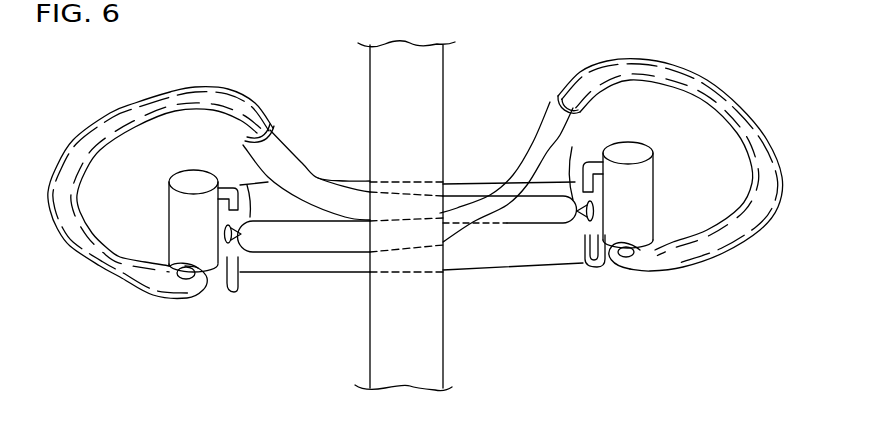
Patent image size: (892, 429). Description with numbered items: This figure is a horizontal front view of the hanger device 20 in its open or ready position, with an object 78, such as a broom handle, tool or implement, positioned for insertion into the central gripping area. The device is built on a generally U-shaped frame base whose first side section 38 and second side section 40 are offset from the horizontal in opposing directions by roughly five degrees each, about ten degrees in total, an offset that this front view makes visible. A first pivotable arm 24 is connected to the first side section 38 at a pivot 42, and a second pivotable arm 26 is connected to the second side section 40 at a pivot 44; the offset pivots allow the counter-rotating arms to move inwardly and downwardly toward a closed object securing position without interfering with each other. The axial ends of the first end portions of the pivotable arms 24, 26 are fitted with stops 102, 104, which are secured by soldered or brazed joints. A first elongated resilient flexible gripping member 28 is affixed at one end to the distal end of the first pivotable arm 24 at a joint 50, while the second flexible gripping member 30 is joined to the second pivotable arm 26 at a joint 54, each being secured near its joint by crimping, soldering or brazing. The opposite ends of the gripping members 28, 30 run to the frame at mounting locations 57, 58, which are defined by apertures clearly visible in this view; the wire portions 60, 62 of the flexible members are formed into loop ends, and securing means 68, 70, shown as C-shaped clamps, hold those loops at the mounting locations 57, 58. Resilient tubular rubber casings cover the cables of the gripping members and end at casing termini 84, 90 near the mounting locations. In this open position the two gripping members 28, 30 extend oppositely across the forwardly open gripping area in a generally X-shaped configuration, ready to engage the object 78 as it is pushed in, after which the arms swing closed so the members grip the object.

The hanger device 20 is at (664, 308).
The first pivotable arm 24 is at (768, 218).
The second pivotable arm 26 is at (99, 270).
The first elongated resilient flexible gripping member 28 is at (511, 171).
The second elongated resilient flexible gripping member 30 is at (306, 168).
The first side section 38 is at (585, 265).
The second side section 40 is at (236, 280).
The pivot 42 is at (654, 203).
The pivot 44 is at (169, 238).
The joint 50 is at (553, 100).
The joint 54 is at (272, 127).
The mounting location 57 is at (585, 222).
The mounting location 58 is at (234, 246).
The wire portion 60 is at (247, 185).
The wire portion 62 is at (572, 147).
The securing means 68 is at (599, 274).
The securing means 70 is at (215, 295).
The secured object 78 is at (443, 77).
The casing terminus 84 is at (580, 222).
The casing terminus 90 is at (252, 252).
The stop 102 is at (653, 157).
The stop 104 is at (169, 183).